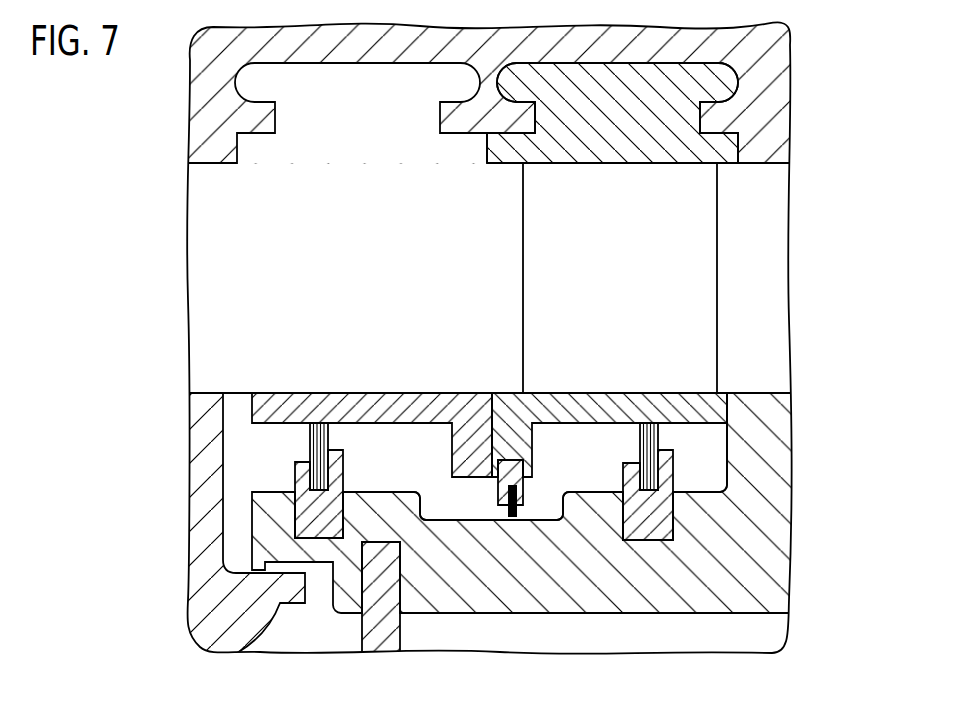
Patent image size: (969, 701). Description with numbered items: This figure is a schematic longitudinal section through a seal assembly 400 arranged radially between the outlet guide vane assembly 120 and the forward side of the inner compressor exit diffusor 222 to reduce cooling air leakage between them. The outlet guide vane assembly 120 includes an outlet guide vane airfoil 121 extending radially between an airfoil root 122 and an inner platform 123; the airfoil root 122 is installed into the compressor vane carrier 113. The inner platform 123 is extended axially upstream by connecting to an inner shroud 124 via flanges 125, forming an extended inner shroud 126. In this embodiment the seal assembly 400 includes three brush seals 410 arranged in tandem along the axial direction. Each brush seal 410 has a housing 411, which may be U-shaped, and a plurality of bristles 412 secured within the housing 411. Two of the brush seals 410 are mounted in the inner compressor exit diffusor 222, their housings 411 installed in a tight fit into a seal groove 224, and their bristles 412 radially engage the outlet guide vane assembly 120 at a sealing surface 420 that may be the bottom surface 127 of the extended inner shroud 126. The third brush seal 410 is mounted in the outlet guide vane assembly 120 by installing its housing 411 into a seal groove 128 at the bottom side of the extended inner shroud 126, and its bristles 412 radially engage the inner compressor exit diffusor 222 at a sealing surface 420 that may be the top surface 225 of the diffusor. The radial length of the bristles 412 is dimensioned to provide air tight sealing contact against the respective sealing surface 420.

The compressor vane carrier 113 is at (208, 117).
The outlet guide vane assembly 120 is at (752, 268).
The outlet guide vane airfoil 121 is at (550, 264).
The airfoil root 122 is at (673, 150).
The inner platform 123 is at (692, 410).
The inner shroud 124 is at (285, 410).
The flanges 125 is at (512, 430).
The extended inner shroud 126 is at (237, 431).
The bottom surface 127 is at (783, 437).
The seal groove 128 is at (483, 466).
The inner compressor exit diffusor 222 is at (765, 582).
The seal groove 224 is at (290, 523).
The top surface 225 is at (447, 517).
The seal assembly 400 is at (699, 473).
The brush seal 410 is at (280, 528).
The housing 411 is at (337, 468).
The bristles 412 is at (318, 438).
The sealing surface 420 is at (328, 427).